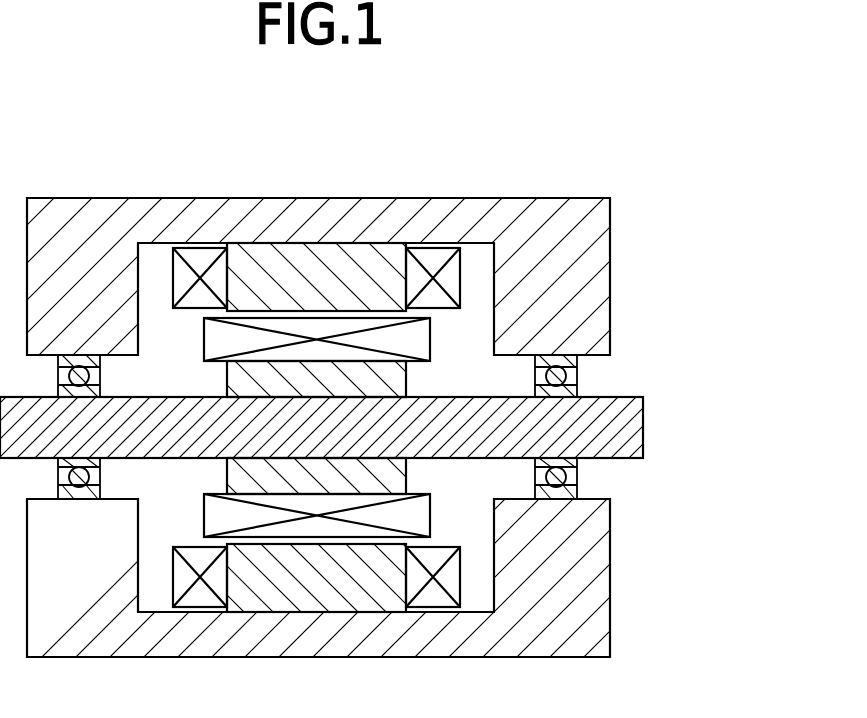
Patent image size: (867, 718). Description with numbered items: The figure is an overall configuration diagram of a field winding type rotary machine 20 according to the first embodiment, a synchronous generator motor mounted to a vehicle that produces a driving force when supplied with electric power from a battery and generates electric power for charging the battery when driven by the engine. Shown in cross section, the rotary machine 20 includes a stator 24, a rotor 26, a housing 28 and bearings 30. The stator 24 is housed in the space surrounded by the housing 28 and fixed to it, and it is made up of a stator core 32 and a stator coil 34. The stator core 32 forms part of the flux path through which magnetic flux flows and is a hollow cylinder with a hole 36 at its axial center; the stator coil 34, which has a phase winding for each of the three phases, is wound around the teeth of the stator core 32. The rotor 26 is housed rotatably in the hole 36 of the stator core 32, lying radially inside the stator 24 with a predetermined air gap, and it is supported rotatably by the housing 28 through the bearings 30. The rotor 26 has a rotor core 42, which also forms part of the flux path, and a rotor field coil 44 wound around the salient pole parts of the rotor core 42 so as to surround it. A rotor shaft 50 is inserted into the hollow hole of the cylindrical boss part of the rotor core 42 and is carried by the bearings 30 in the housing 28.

The field winding type rotary machine 20 is at (607, 177).
The stator 24 is at (438, 150).
The rotor 26 is at (472, 317).
The housing 28 is at (593, 253).
The bearing 30 is at (575, 358).
The stator core 32 is at (322, 255).
The stator coil 34 is at (428, 260).
The hole 36 is at (327, 318).
The rotor core 42 is at (375, 373).
The rotor field coil 44 is at (393, 337).
The rotor shaft 50 is at (618, 412).